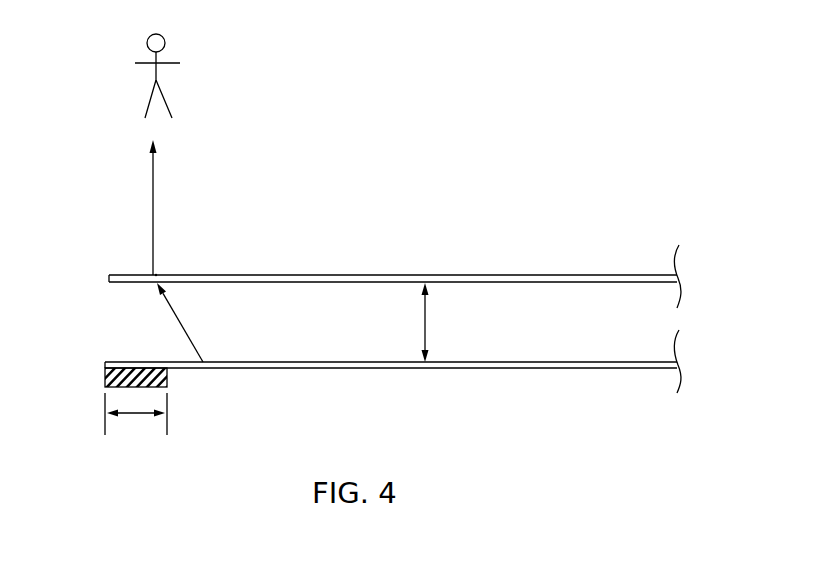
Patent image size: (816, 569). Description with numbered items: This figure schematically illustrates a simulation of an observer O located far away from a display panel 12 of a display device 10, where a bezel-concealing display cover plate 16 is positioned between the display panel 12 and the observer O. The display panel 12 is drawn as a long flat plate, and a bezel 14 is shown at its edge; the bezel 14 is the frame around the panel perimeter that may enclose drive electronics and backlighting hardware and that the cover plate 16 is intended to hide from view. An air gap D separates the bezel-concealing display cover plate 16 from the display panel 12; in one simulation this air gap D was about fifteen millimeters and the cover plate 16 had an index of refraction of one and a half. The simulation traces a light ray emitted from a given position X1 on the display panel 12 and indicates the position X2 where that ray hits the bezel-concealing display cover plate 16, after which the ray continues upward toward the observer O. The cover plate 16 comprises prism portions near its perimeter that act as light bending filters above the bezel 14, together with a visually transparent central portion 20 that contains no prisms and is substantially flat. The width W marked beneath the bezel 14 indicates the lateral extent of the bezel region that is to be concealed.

The display device 10 is at (118, 327).
The display panel 12 is at (555, 362).
The bezel 14 is at (103, 375).
The bezel-concealing display cover plate 16 is at (325, 275).
The visually transparent central portion 20 is at (166, 183).
The observer O is at (186, 47).
The position on the display panel X1 is at (203, 366).
The position on the display cover plate X2 is at (157, 273).
The air gap D is at (439, 322).
The light source width W is at (136, 418).